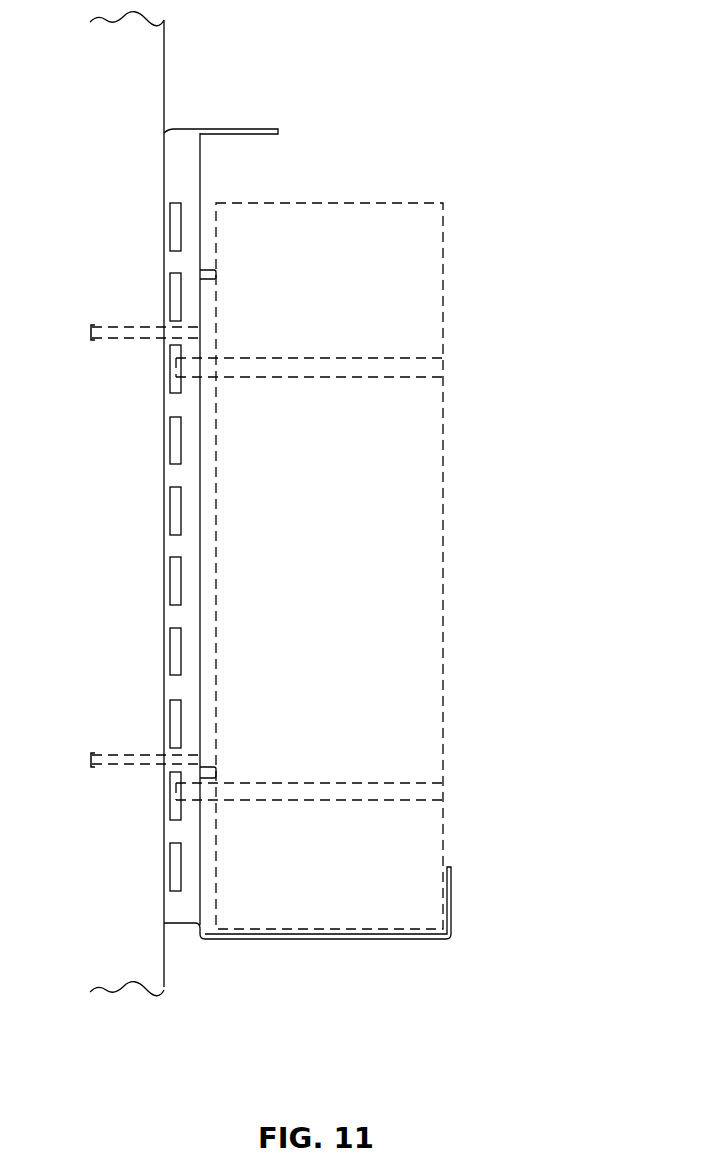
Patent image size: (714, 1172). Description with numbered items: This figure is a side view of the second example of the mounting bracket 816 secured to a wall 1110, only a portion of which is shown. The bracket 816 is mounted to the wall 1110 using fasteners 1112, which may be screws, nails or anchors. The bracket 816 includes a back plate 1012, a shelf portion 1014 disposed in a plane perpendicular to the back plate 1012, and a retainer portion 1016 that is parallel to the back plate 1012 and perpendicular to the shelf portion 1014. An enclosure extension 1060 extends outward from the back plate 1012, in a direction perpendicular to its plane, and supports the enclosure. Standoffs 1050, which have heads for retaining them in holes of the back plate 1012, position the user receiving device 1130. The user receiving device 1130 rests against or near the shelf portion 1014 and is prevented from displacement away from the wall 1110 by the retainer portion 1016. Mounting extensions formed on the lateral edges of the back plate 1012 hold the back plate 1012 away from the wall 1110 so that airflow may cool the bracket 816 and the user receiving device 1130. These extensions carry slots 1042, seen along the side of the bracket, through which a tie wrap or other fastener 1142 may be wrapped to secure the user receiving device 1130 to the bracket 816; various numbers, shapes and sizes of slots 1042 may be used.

The mounting bracket 816 is at (180, 143).
The wall 1110 is at (150, 977).
The back plate 1012 is at (200, 851).
The enclosure extension 1060 is at (262, 128).
The shelf portion 1014 is at (278, 941).
The retainer portion 1016 is at (452, 893).
The user receiving device 1130 is at (444, 510).
The fastener 1142 is at (412, 357).
The fasteners 1112 is at (102, 326).
The standoffs 1050 is at (213, 268).
The slots 1042 is at (170, 438).